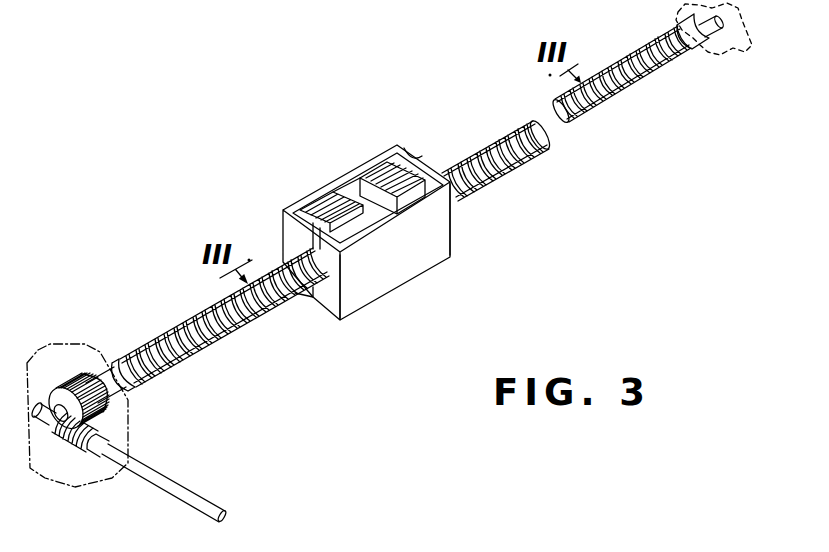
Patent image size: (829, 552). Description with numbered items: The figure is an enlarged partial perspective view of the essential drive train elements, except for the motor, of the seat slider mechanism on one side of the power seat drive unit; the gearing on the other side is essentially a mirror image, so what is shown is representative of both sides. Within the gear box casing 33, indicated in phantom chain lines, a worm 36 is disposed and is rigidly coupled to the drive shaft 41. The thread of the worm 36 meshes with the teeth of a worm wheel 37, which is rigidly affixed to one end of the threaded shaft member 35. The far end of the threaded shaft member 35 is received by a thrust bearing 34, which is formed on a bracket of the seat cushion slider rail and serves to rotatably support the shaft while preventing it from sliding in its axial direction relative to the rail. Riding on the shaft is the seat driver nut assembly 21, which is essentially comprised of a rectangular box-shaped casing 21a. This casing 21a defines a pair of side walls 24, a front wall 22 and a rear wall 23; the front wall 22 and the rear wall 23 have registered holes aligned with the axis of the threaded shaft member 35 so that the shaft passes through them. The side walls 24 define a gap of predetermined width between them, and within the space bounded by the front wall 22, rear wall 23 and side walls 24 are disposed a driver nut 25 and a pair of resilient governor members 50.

The seat driver nut assembly 21 is at (390, 300).
The box-shaped casing 21a is at (362, 300).
The front wall 22 is at (323, 300).
The rear wall 23 is at (453, 232).
The side walls 24 is at (330, 180).
The driver nut 25 is at (350, 200).
The resilient governor members 50 is at (307, 193).
The gear box casing 33 is at (40, 492).
The thrust bearing 34 is at (746, 60).
The threaded shaft member 35 is at (583, 129).
The worm 36 is at (100, 462).
The worm wheel 37 is at (66, 380).
The drive shaft 41 is at (213, 498).